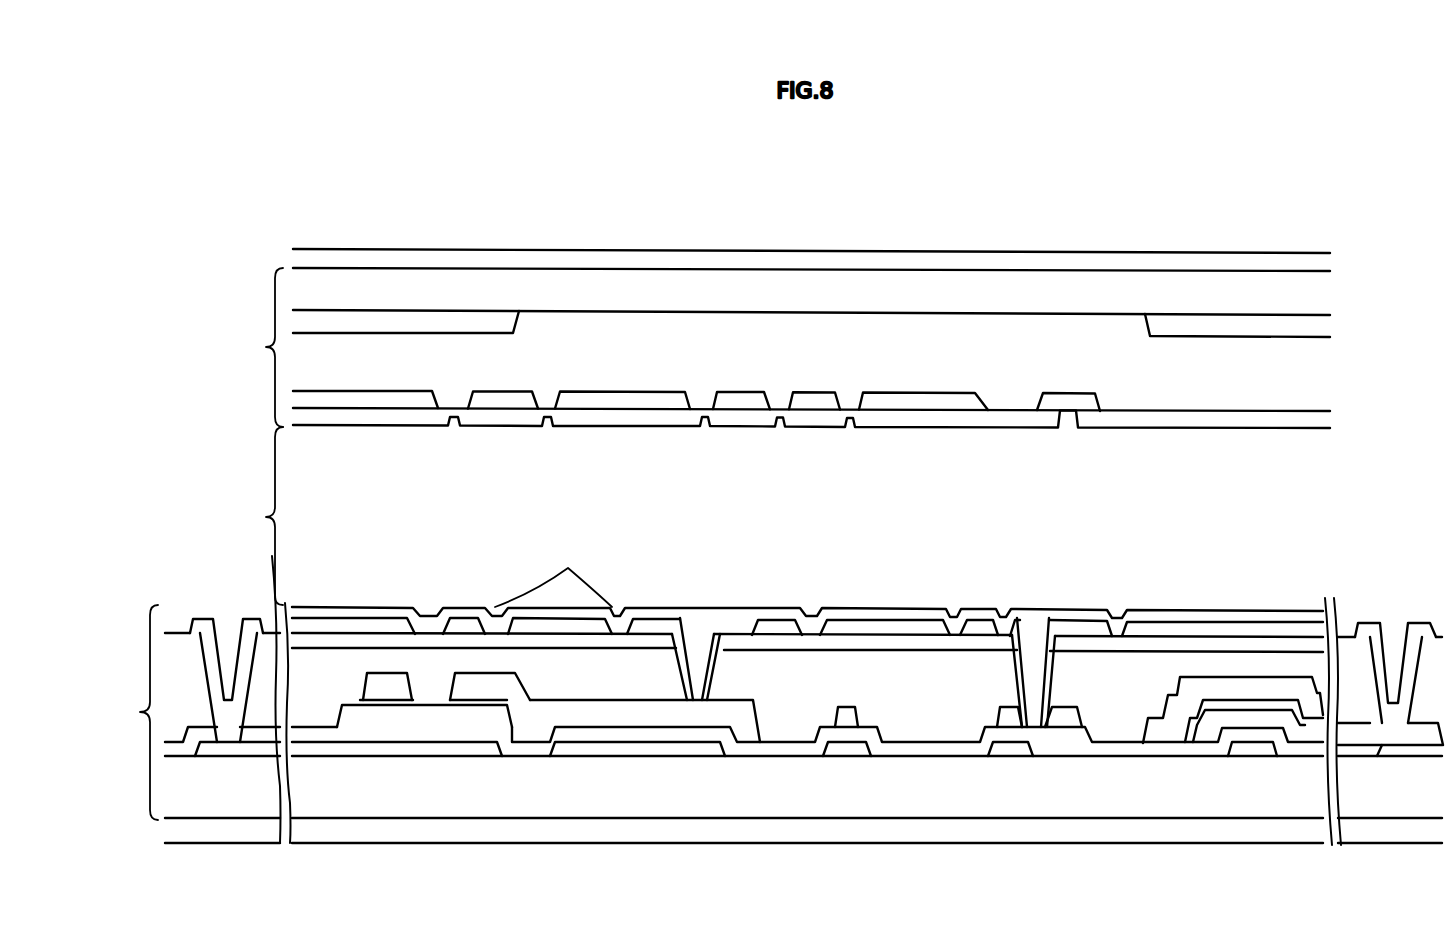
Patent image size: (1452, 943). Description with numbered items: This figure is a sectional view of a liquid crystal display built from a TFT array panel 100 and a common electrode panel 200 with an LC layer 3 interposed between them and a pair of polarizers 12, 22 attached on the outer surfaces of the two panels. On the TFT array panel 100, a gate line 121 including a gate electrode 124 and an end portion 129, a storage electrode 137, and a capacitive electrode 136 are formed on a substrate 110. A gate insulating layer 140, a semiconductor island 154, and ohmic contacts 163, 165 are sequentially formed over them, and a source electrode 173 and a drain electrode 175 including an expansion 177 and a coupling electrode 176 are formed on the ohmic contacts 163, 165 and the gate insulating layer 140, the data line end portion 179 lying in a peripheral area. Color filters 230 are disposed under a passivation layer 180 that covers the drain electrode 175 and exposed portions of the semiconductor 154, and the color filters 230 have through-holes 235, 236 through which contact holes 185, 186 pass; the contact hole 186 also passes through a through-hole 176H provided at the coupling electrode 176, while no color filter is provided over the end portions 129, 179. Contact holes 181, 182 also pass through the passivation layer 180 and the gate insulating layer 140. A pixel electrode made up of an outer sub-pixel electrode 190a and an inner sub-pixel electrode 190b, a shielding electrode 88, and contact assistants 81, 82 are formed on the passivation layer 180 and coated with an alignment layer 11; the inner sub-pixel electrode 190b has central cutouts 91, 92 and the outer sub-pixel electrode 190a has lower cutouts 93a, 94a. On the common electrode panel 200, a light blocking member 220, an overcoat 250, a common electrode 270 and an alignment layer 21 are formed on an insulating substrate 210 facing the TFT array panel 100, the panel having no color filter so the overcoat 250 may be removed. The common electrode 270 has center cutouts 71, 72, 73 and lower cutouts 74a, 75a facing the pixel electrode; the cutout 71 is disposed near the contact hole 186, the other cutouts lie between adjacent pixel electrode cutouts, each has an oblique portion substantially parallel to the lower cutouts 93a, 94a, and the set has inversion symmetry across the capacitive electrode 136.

The LC layer 3 is at (264, 516).
The alignment layer 11 is at (362, 618).
The polarizer 12 is at (176, 833).
The alignment layer 21 is at (352, 418).
The polarizer 22 is at (298, 256).
The center cutout 71 is at (1046, 411).
The center cutout 72 is at (980, 416).
The center cutout 73 is at (840, 408).
The lower cutout 74a is at (533, 405).
The lower cutout 75a is at (436, 405).
The contact assistant 81 is at (207, 635).
The contact assistant 82 is at (1373, 638).
The shielding electrode 88 is at (310, 624).
The central cutout 91 is at (1000, 632).
The central cutout 92 is at (950, 632).
The lower cutout 93a is at (812, 640).
The lower cutout 94a is at (742, 625).
The TFT array panel 100 is at (127, 712).
The substrate 110 is at (738, 792).
The gate line 121 is at (1244, 752).
The gate electrode 124 is at (320, 750).
The end portion 129 is at (227, 748).
The capacitive electrode 136 is at (850, 750).
The storage electrode 137 is at (597, 750).
The gate insulating layer 140 is at (1140, 745).
The semiconductor island 154 is at (428, 717).
The ohmic contact 163 is at (375, 704).
The ohmic contact 165 is at (478, 704).
The source electrode 173 is at (388, 685).
The drain electrode 175 is at (497, 687).
The coupling electrode 176 is at (845, 717).
The through-hole 176H is at (1030, 718).
The expansion 177 is at (663, 712).
The end portion 179 is at (1383, 740).
The passivation layer 180 is at (913, 645).
The contact hole 181 is at (252, 657).
The contact hole 182 is at (1411, 659).
The contact hole 185 is at (696, 680).
The contact hole 186 is at (1024, 660).
The outer sub-pixel electrode 190a is at (465, 627).
The inner sub-pixel electrode 190b is at (1097, 626).
The common electrode panel 200 is at (250, 347).
The insulating substrate 210 is at (1000, 292).
The light blocking member 220 is at (448, 319).
The color filter 230 is at (876, 680).
The through-hole 235 is at (697, 658).
The through-hole 236 is at (1043, 720).
The overcoat 250 is at (824, 339).
The common electrode 270 is at (1228, 405).